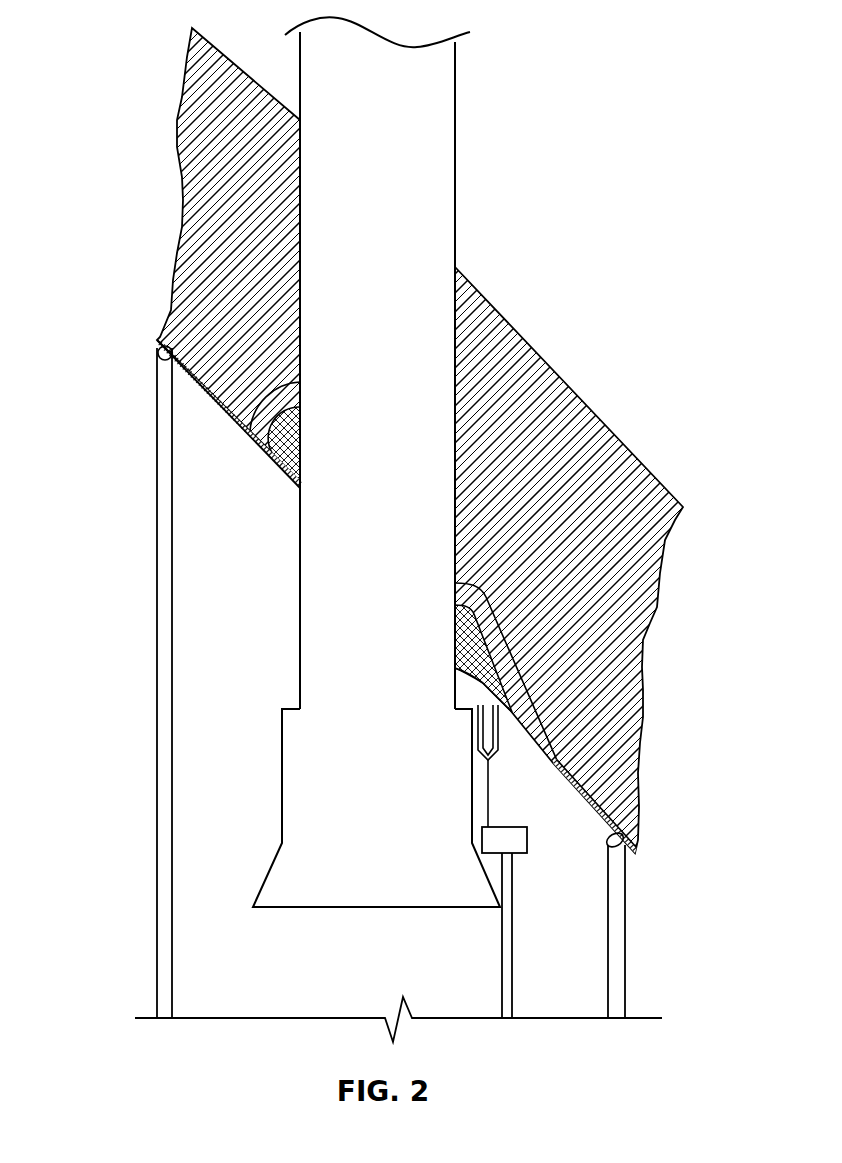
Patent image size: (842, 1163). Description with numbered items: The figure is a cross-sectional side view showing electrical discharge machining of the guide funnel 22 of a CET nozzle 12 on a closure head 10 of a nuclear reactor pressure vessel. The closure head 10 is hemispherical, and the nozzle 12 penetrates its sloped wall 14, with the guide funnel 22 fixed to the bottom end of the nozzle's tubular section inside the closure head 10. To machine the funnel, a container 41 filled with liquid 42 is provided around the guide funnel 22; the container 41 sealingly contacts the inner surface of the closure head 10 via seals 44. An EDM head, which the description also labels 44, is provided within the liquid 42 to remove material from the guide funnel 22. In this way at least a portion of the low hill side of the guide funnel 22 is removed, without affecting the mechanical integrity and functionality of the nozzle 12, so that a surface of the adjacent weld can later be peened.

The closure head 10 is at (604, 220).
The CET nozzle 12 is at (245, 907).
The sloped wall 14 is at (608, 465).
The guide funnel 22 is at (312, 593).
The container 41 is at (117, 680).
The liquid 42 is at (209, 681).
The seals 44 is at (157, 348).